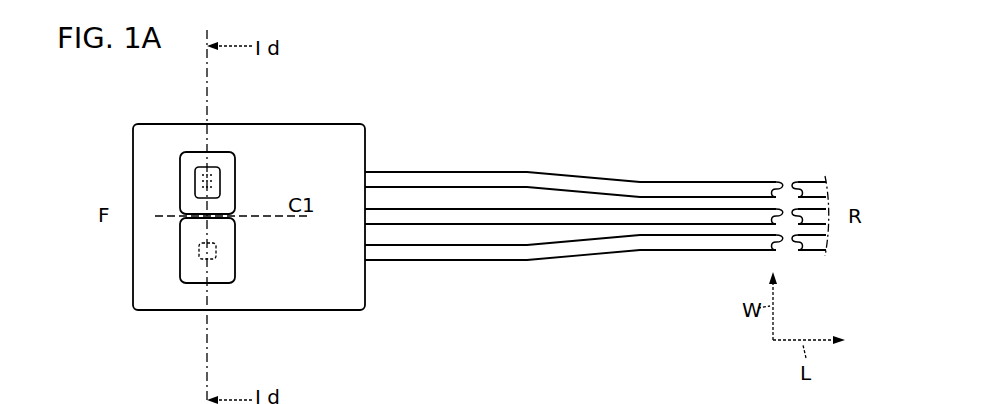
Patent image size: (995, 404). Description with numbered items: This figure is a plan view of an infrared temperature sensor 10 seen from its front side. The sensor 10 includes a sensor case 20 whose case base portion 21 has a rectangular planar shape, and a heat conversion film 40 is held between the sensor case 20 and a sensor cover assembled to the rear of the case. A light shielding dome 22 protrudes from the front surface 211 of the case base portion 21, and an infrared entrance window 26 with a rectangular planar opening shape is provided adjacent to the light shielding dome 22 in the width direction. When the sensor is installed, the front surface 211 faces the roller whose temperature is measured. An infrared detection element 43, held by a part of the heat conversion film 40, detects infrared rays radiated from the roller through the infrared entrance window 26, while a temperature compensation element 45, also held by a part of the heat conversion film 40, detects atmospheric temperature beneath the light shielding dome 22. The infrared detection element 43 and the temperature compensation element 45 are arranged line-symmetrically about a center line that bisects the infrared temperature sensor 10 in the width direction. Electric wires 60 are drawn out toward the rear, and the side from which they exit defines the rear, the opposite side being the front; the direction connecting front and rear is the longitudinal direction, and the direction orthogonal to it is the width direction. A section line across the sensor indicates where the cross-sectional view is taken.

The infrared temperature sensor 10 is at (597, 204).
The sensor case 20 is at (292, 122).
The case base portion 21 is at (337, 124).
The front surface 211 is at (332, 288).
The light shielding dome 22 is at (236, 181).
The infrared entrance window 26 is at (235, 270).
The heat conversion film 40 is at (236, 237).
The infrared detection element 43 is at (199, 251).
The temperature compensation element 45 is at (195, 181).
The electric wires 60 is at (615, 177).